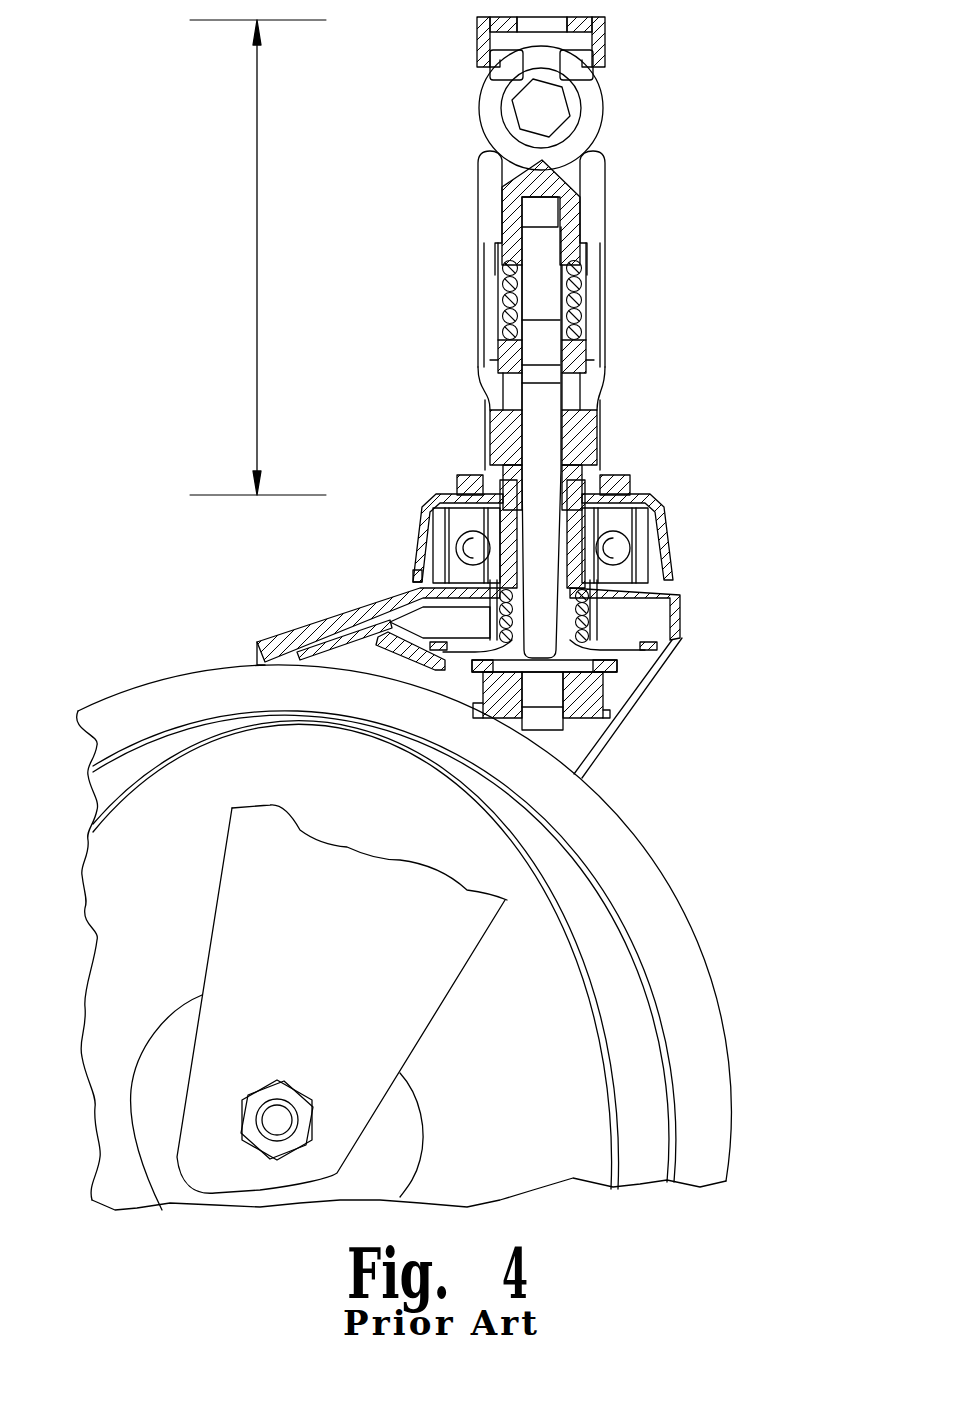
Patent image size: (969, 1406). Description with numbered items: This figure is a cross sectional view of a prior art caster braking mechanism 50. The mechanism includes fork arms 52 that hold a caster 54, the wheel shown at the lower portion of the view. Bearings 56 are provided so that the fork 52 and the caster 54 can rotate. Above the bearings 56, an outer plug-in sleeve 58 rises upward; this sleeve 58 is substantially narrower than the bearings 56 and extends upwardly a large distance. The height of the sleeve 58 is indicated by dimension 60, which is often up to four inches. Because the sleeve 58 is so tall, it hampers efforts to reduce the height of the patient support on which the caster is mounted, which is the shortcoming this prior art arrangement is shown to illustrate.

The caster braking mechanism 50 is at (531, 397).
The fork arms 52 is at (447, 985).
The caster 54 is at (640, 855).
The bearings 56 is at (640, 546).
The outer plug-in sleeve 58 is at (596, 204).
The dimension 60 is at (257, 263).